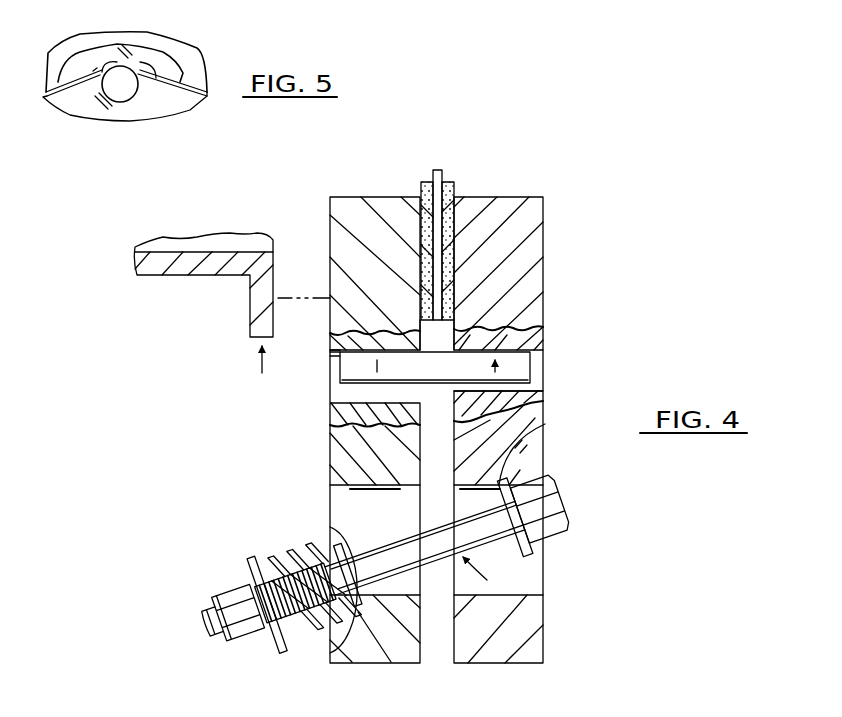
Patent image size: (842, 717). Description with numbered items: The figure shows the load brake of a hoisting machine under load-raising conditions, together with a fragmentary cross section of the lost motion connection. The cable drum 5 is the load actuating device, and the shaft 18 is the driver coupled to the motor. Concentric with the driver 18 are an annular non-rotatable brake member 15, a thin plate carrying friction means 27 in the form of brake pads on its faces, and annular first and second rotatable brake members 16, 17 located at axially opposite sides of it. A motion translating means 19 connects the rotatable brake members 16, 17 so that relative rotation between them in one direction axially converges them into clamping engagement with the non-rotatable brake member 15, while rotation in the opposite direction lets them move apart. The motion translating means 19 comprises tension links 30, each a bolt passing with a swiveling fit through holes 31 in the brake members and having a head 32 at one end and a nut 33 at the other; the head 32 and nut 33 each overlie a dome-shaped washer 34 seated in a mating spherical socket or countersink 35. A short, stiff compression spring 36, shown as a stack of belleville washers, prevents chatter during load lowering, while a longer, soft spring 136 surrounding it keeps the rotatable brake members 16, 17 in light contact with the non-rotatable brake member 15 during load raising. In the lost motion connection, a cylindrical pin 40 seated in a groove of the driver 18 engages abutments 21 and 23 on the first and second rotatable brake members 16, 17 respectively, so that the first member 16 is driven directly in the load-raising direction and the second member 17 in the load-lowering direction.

In FIG. 4, the cable drum 5 is at (202, 273).
In FIG. 4, the non-rotatable brake member 15 is at (446, 172).
In FIG. 5, the first rotatable brake member 16 is at (187, 62).
In FIG. 4, the first rotatable brake member 16 is at (333, 225).
In FIG. 5, the second rotatable brake member 17 is at (150, 55).
In FIG. 4, the second rotatable brake member 17 is at (536, 240).
In FIG. 5, the shaft 18 is at (100, 105).
In FIG. 4, the motion translating means 19 is at (485, 576).
In FIG. 5, the abutment 21 is at (143, 82).
In FIG. 4, the abutment 21 is at (332, 358).
In FIG. 5, the abutment 23 is at (117, 68).
In FIG. 4, the abutment 23 is at (543, 393).
In FIG. 4, the friction means 27 is at (446, 193).
In FIG. 4, the tension link 30 is at (555, 508).
In FIG. 4, the hole 31 is at (332, 489).
In FIG. 4, the head 32 is at (560, 483).
In FIG. 4, the nut 33 is at (253, 640).
In FIG. 4, the dome-shaped washer 34 is at (542, 542).
In FIG. 4, the spherical socket or countersink 35 is at (528, 442).
In FIG. 4, the compression spring 36 is at (315, 537).
In FIG. 5, the pin 40 is at (119, 102).
In FIG. 4, the pin 40 is at (522, 364).
In FIG. 4, the spring 136 is at (275, 543).